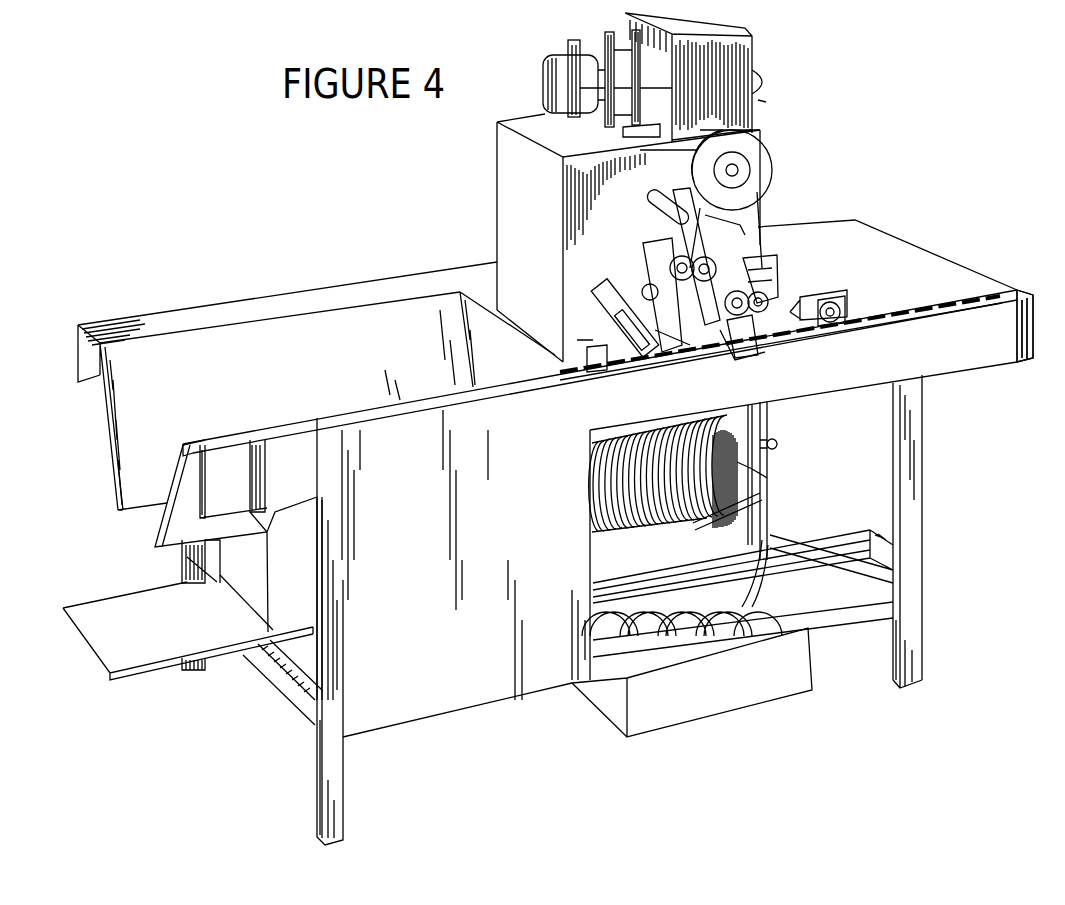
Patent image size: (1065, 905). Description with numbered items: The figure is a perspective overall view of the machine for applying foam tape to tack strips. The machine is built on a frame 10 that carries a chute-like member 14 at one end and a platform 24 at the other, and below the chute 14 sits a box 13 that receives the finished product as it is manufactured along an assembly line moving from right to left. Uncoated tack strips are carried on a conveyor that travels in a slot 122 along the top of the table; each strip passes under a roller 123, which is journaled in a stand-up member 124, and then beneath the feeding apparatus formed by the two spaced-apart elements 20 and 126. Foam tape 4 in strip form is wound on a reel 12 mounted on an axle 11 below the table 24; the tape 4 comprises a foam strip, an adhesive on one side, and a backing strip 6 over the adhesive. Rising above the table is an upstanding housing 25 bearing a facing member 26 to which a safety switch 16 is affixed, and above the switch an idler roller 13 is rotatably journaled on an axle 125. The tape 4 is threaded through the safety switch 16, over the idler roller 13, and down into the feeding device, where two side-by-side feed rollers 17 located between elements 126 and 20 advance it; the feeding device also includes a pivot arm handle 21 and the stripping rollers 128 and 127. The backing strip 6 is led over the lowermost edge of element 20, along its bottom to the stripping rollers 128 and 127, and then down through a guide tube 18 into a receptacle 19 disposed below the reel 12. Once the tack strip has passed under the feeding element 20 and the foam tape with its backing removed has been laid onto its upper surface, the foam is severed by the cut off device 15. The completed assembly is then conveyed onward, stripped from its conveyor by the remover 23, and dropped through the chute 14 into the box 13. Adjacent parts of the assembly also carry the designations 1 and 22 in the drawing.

The track 1 is at (912, 303).
The foam tape 4 is at (700, 137).
The backing strip 6 is at (707, 348).
The frame 10 is at (426, 576).
The axle 11 is at (777, 442).
The reel 12 is at (745, 475).
The idler roller 13 is at (306, 590).
The chute-like member 14 is at (306, 385).
The cut off device 15 is at (617, 372).
The safety switch 16 is at (775, 275).
The feed rollers 17 is at (668, 262).
The guide tube 18 is at (742, 335).
The receptacle 19 is at (730, 701).
The feeding apparatus element 20 is at (668, 350).
The pivot arm handle 21 is at (680, 207).
The plate 22 is at (655, 245).
The remover 23 is at (592, 370).
The platform 24 is at (896, 263).
The upstanding housing 25 is at (541, 245).
The facing member 26 is at (575, 256).
The slot 122 is at (1013, 290).
The roller 123 is at (842, 304).
The stand-up member 124 is at (839, 312).
The axle 125 is at (740, 168).
The feeding apparatus element 126 is at (725, 223).
The stripping roller 127 is at (792, 296).
The stripping roller 128 is at (738, 350).